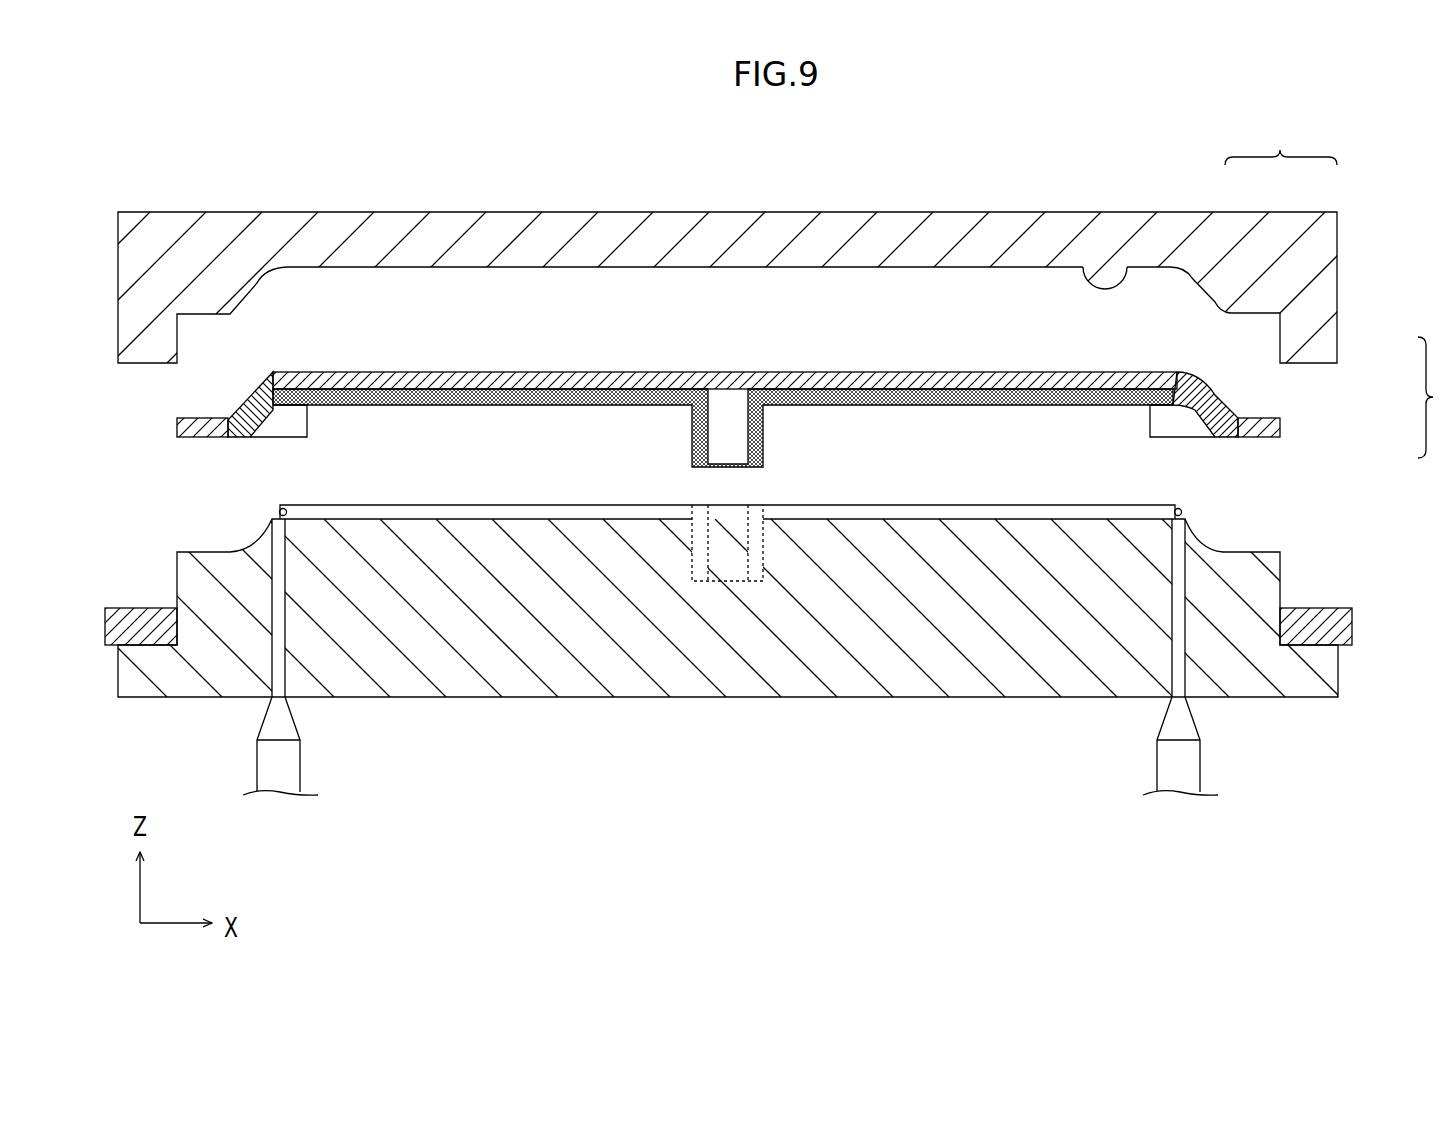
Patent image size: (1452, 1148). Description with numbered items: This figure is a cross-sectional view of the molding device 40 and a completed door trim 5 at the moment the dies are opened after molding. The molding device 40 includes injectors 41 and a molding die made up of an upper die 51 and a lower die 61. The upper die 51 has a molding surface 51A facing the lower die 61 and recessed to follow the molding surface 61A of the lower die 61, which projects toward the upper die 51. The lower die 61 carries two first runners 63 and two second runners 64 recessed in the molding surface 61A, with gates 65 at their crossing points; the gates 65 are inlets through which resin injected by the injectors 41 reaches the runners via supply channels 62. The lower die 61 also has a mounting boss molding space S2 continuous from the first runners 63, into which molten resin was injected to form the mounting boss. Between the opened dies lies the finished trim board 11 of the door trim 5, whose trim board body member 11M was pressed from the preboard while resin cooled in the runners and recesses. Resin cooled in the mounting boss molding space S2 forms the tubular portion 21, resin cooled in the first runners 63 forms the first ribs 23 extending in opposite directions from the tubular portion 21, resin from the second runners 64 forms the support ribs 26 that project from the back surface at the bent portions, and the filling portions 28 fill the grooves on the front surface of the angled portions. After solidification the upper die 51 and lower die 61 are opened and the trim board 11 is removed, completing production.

The display module 5 is at (1434, 397).
The trim board 11 is at (1281, 143).
The trim board body member 11M is at (1112, 377).
The tubular portion 21 is at (760, 440).
The first ribs 23 is at (390, 395).
The support ribs 26 is at (267, 428).
The filling portions 28 is at (275, 372).
The molding device 40 is at (1186, 182).
The injectors 41 is at (258, 758).
The upper die 51 is at (1320, 343).
The molding surface 51A is at (1088, 266).
The lower die 61 is at (1280, 555).
The molding surface 61A is at (1048, 505).
The supply channels 62 is at (283, 612).
The first runners 63 is at (505, 517).
The second runners 64 is at (732, 441).
The gates 65 is at (281, 512).
The mounting boss molding space S2 is at (695, 545).